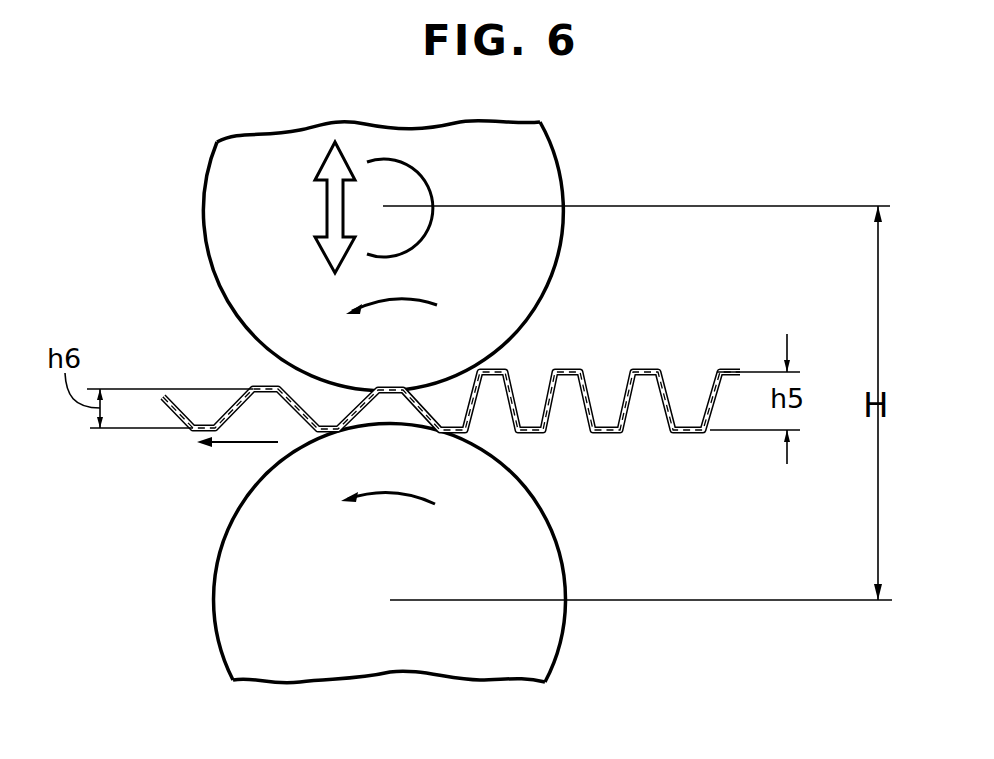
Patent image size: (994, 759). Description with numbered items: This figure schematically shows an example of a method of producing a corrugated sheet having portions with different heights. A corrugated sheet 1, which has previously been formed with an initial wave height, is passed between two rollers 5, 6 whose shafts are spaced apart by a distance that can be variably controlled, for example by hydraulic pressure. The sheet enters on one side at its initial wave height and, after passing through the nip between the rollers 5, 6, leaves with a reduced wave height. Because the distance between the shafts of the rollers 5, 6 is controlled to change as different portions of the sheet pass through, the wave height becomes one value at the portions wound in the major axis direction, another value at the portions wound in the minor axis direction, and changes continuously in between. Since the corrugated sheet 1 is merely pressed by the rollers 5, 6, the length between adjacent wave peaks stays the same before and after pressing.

The corrugated sheet 1 is at (606, 434).
The roller 5 is at (548, 158).
The roller 6 is at (558, 636).